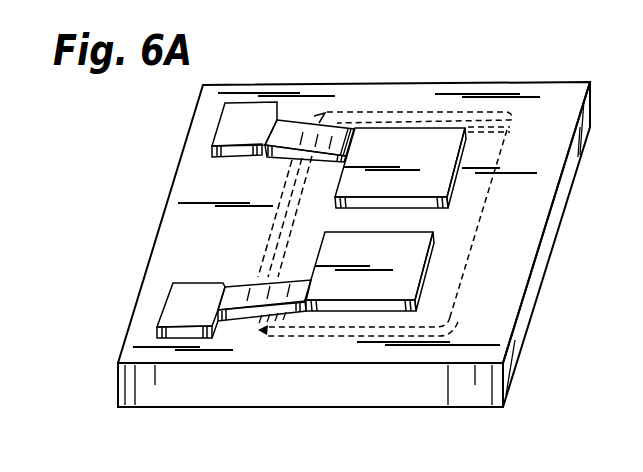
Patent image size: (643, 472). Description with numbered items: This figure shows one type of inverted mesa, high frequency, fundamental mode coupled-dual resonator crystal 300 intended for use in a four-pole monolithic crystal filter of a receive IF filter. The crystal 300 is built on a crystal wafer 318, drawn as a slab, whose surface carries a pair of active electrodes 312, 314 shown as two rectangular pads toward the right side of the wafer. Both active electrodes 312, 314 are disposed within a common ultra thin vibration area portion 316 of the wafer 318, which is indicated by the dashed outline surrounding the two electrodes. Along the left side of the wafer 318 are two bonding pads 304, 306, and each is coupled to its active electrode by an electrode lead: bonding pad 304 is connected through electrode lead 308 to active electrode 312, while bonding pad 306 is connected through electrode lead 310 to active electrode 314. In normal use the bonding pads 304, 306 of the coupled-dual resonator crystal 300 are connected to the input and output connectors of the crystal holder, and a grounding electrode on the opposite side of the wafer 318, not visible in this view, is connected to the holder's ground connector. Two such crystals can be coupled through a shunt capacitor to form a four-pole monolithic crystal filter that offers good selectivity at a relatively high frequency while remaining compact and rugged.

The coupled-dual resonator crystal 300 is at (387, 74).
The bonding pad 304 is at (193, 285).
The bonding pad 306 is at (233, 152).
The electrode lead 308 is at (243, 289).
The electrode lead 310 is at (300, 152).
The active electrode 312 is at (360, 258).
The active electrode 314 is at (377, 156).
The vibration area portion 316 is at (457, 232).
The crystal wafer 318 is at (538, 82).